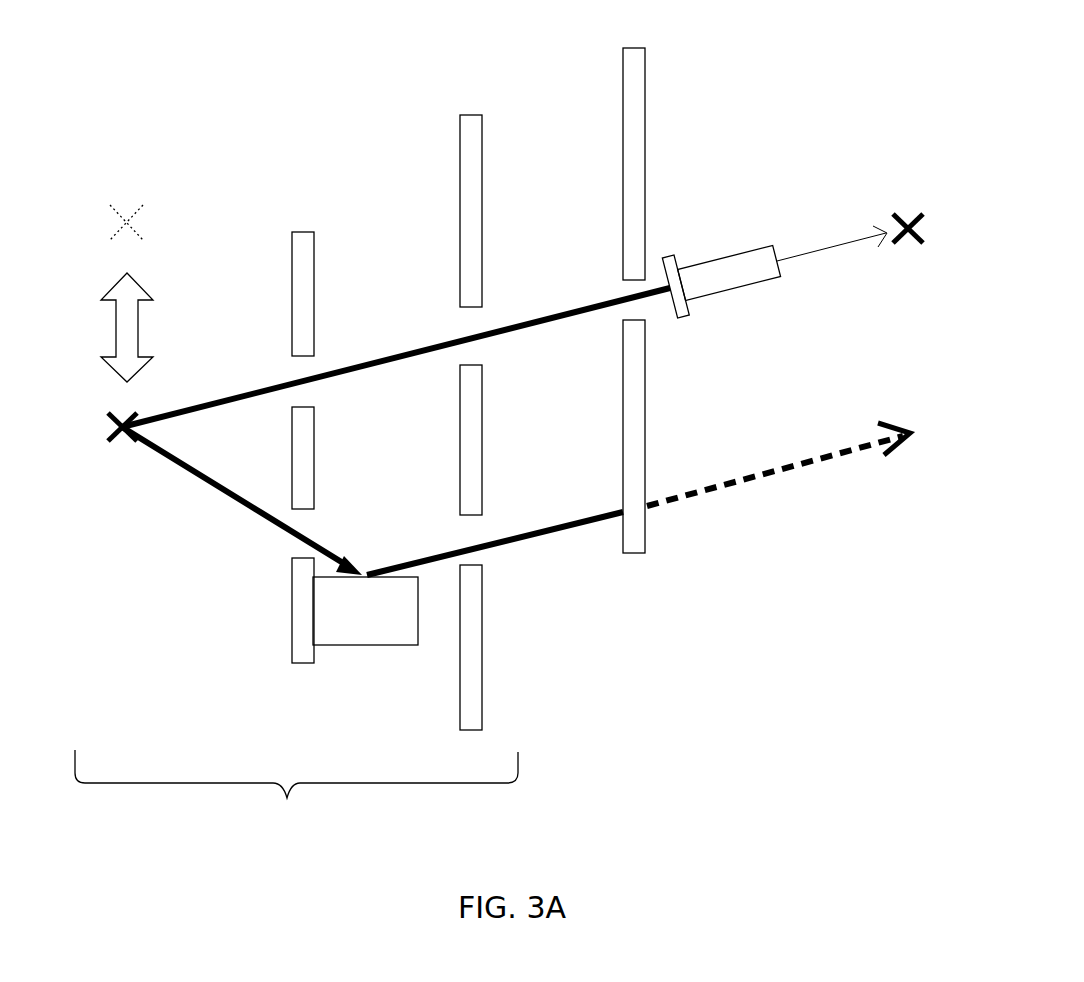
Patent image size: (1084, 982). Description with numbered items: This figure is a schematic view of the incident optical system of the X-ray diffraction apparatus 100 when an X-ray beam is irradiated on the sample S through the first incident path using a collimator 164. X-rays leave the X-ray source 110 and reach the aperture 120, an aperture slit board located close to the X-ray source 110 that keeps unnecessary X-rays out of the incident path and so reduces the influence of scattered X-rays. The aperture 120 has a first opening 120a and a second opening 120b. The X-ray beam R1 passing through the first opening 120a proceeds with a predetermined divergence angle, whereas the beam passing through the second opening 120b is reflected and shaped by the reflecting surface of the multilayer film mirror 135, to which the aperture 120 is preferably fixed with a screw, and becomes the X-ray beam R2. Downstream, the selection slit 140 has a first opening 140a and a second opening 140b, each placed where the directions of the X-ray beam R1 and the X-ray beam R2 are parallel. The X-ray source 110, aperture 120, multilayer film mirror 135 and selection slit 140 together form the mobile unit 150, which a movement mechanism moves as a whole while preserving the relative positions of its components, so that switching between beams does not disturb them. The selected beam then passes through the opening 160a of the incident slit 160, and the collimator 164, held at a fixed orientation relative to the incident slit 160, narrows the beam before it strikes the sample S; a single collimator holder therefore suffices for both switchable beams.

The X-ray diffraction apparatus 100 is at (168, 103).
The X-ray source 110 is at (122, 438).
The aperture 120 is at (300, 232).
The first opening 120a is at (286, 367).
The second opening 120b is at (290, 558).
The multilayer film mirror 135 is at (362, 647).
The selection slit 140 is at (482, 130).
The first opening 140a is at (460, 323).
The second opening 140b is at (462, 533).
The mobile unit 150 is at (296, 790).
The incident slit 160 is at (647, 80).
The opening 160a is at (618, 313).
The collimator 164 is at (713, 262).
The sample S is at (893, 210).
The X-ray beam R1 is at (553, 313).
The X-ray beam R2 is at (553, 533).